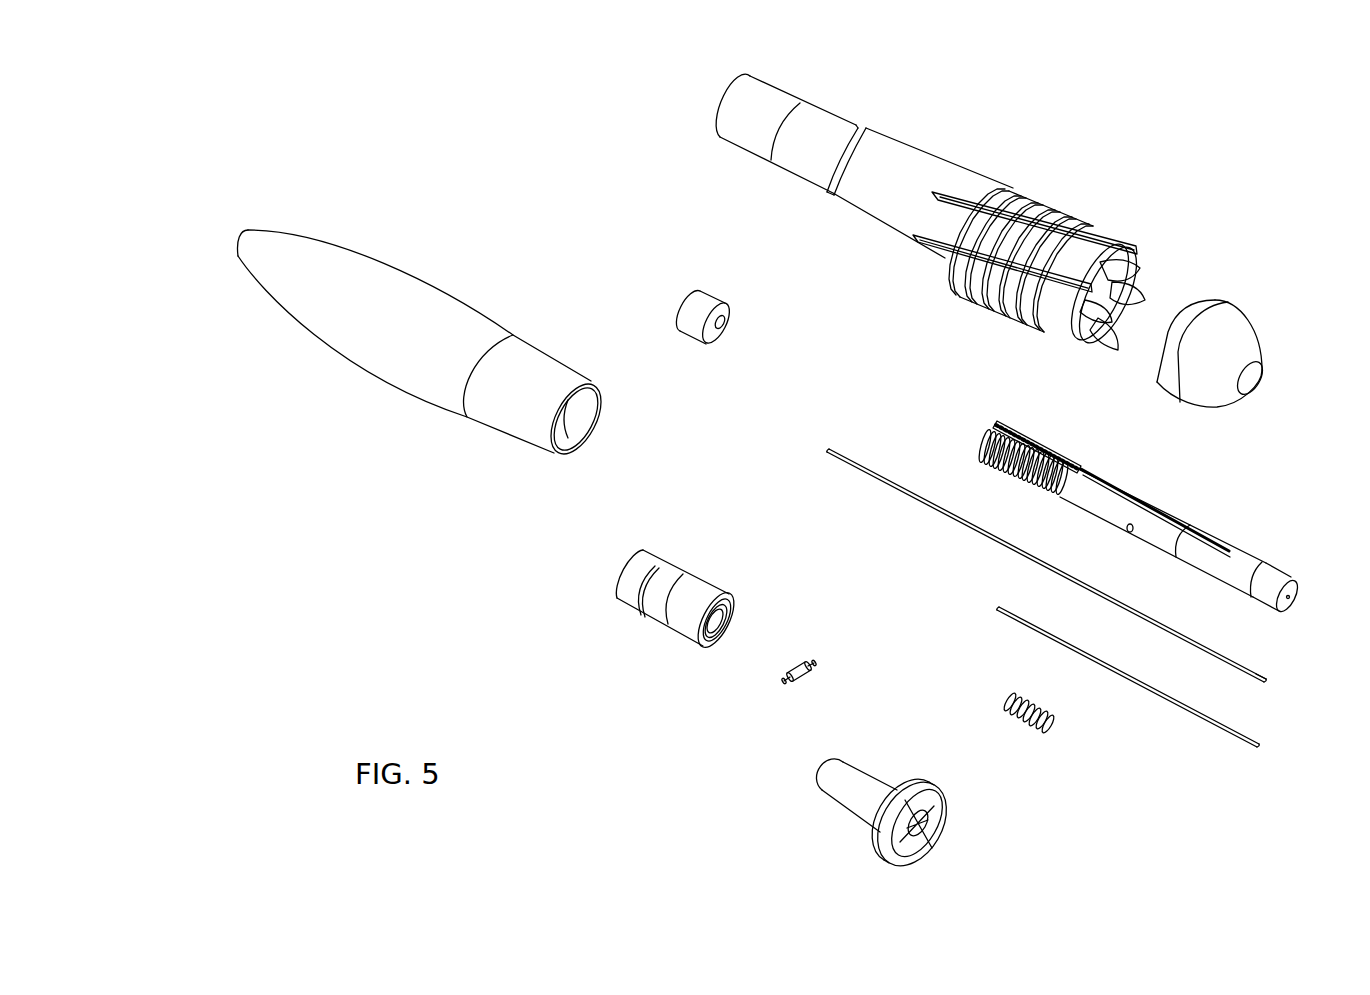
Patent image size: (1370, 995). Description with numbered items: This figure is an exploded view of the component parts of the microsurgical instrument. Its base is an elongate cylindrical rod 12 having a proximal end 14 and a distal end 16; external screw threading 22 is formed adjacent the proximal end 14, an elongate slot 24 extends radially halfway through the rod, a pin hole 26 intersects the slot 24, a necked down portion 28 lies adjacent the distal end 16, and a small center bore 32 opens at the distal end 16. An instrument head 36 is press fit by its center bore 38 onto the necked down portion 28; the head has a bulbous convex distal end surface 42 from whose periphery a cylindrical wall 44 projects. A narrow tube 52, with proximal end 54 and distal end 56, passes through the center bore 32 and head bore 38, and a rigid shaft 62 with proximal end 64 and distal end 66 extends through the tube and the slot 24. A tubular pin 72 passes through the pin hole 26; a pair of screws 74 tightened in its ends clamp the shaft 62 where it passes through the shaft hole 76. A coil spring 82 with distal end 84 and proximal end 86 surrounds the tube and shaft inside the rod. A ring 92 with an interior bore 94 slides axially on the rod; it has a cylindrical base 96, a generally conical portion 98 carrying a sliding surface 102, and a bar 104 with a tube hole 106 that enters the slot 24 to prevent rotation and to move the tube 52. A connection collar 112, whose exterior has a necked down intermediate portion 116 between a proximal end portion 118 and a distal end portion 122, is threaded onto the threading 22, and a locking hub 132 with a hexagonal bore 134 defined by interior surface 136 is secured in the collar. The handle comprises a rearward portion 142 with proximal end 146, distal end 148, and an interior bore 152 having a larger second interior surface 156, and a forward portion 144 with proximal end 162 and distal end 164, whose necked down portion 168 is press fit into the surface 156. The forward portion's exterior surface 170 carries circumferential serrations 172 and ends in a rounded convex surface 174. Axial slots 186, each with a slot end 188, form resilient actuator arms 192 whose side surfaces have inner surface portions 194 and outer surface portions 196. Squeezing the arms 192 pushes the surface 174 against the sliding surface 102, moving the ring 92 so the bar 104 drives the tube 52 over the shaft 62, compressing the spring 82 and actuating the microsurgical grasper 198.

The rod 12 is at (1100, 512).
The rod proximal end 14 is at (985, 433).
The rod distal end 16 is at (1298, 592).
The external screw threading 22 is at (1017, 477).
The slot 24 is at (1168, 508).
The pin hole 26 is at (1131, 533).
The rod necked down portion 28 is at (1258, 597).
The rod center bore 32 is at (1298, 602).
The instrument head 36 is at (1237, 300).
The instrument head center bore 38 is at (1259, 381).
The head distal end surface 42 is at (1246, 338).
The cylindrical wall 44 is at (1207, 312).
The tube 52 is at (1132, 679).
The tube proximal end 54 is at (996, 608).
The tube distal end 56 is at (1262, 748).
The shaft 62 is at (922, 497).
The shaft proximal end 64 is at (826, 450).
The shaft distal end 66 is at (1267, 682).
The pin 72 is at (800, 672).
The screws 74 is at (819, 662).
The shaft hole 76 is at (815, 683).
The coil spring 82 is at (1020, 720).
The spring distal end 84 is at (1003, 702).
The spring proximal end 86 is at (1050, 728).
The ring 92 is at (857, 838).
The ring interior bore 94 is at (920, 840).
The cylindrical base 96 is at (830, 800).
The generally conical portion 98 is at (922, 792).
The sliding surface 102 is at (891, 792).
The bar 104 is at (915, 812).
The tube hole 106 is at (920, 826).
The connection collar 112 is at (691, 566).
The intermediate portion 116 is at (662, 610).
The proximal end portion 118 is at (626, 593).
The distal end portion 122 is at (690, 630).
The locking hub 132 is at (690, 333).
The hub interior bore 134 is at (730, 330).
The hub interior surface 136 is at (725, 322).
The handle rearward portion 142 is at (372, 282).
The handle forward portion 144 is at (893, 165).
The handle rearward portion proximal end 146 is at (240, 232).
The handle rearward portion distal end 148 is at (590, 392).
The interior bore 152 is at (582, 419).
The second interior surface 156 is at (582, 446).
The handle forward portion proximal end 162 is at (720, 88).
The handle forward portion distal end 164 is at (1112, 262).
The necked down portion 168 is at (773, 98).
The exterior surface 170 is at (930, 168).
The circumferential serrations 172 is at (1035, 188).
The rounded convex surface 174 is at (1112, 275).
The axial slots 186 is at (992, 186).
The slot end 188 is at (946, 192).
The actuator arms 192 is at (1052, 215).
The inner surface portions 194 is at (1072, 258).
The outer surface portions 196 is at (1080, 208).
The microsurgical grasper 198 is at (1283, 681).